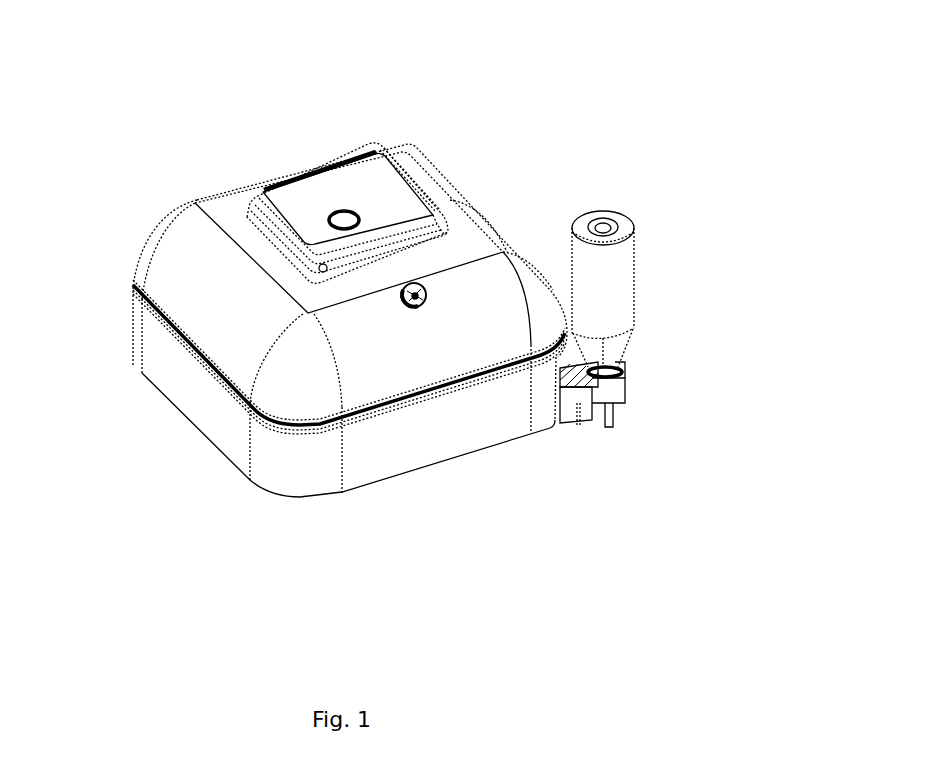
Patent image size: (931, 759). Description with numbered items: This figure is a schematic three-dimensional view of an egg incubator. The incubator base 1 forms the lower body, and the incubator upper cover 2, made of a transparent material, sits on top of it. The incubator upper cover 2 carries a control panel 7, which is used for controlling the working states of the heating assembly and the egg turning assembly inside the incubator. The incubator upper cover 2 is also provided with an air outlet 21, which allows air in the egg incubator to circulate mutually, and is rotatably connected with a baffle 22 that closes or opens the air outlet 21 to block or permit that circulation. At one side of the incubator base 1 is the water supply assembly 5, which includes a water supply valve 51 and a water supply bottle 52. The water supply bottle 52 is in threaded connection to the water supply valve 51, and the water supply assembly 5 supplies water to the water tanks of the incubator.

The incubator base 1 is at (207, 413).
The incubator upper cover 2 is at (178, 283).
The control panel 7 is at (342, 185).
The air outlet 21 is at (411, 305).
The baffle 22 is at (422, 287).
The water supply assembly 5 is at (709, 319).
The water supply valve 51 is at (573, 394).
The water supply bottle 52 is at (603, 292).